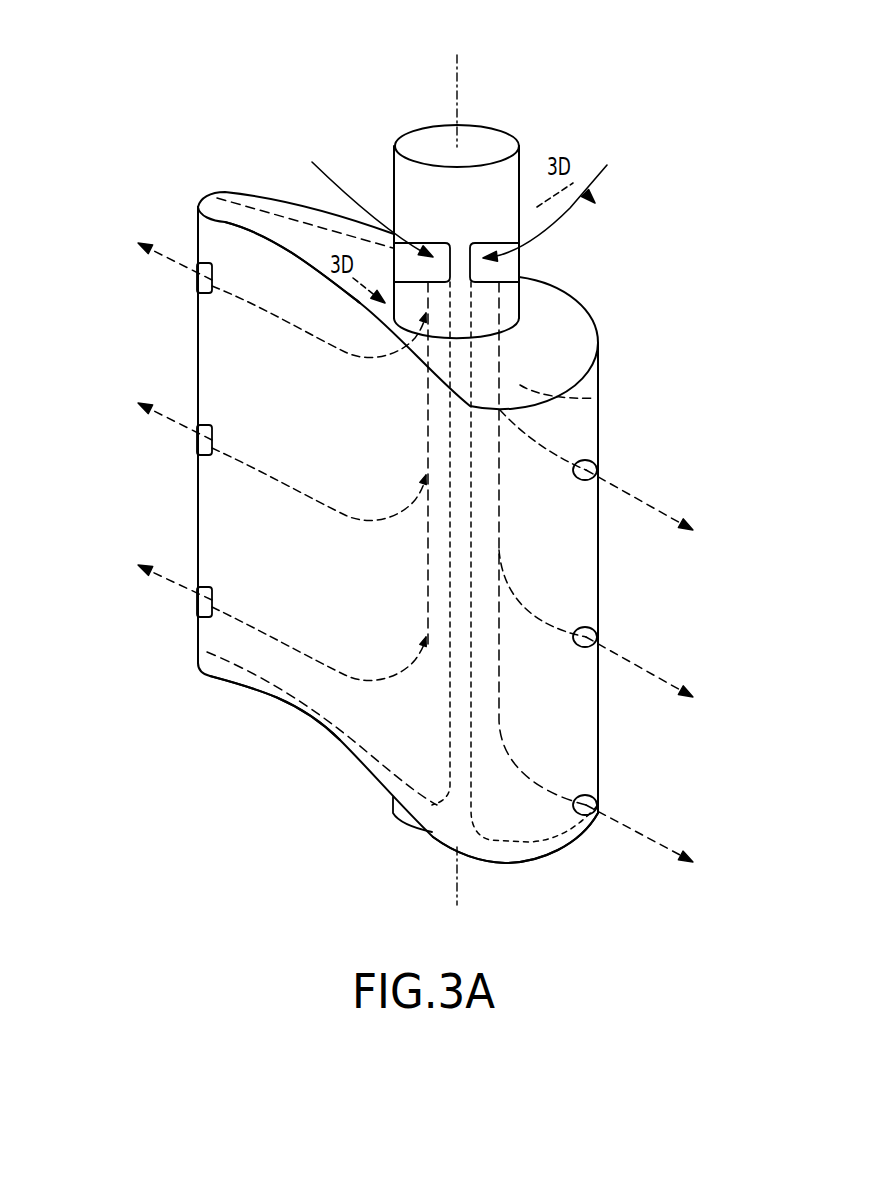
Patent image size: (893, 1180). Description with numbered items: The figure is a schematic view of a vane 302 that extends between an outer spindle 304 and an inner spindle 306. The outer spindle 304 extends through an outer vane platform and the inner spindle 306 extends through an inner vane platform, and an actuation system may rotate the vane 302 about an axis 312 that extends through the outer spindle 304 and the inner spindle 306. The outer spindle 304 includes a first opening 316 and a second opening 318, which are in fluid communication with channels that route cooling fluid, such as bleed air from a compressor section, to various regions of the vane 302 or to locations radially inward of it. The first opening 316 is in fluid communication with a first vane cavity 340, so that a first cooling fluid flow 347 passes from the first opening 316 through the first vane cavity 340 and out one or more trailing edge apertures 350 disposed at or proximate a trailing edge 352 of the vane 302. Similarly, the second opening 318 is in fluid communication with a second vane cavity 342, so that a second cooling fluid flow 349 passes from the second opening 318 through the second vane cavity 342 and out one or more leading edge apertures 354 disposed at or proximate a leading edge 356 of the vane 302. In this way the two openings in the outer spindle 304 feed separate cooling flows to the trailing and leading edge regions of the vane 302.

The vane 302 is at (172, 88).
The outer spindle 304 is at (497, 147).
The inner spindle 306 is at (393, 811).
The axis 312 is at (457, 93).
The first opening 316 is at (430, 244).
The second opening 318 is at (520, 270).
The first vane cavity 340 is at (228, 658).
The second vane cavity 342 is at (548, 836).
The first cooling fluid flow 347 is at (325, 178).
The second cooling fluid flow 349 is at (607, 165).
The trailing edge apertures 350 is at (197, 285).
The trailing edge 352 is at (197, 508).
The leading edge apertures 354 is at (590, 468).
The leading edge 356 is at (598, 568).